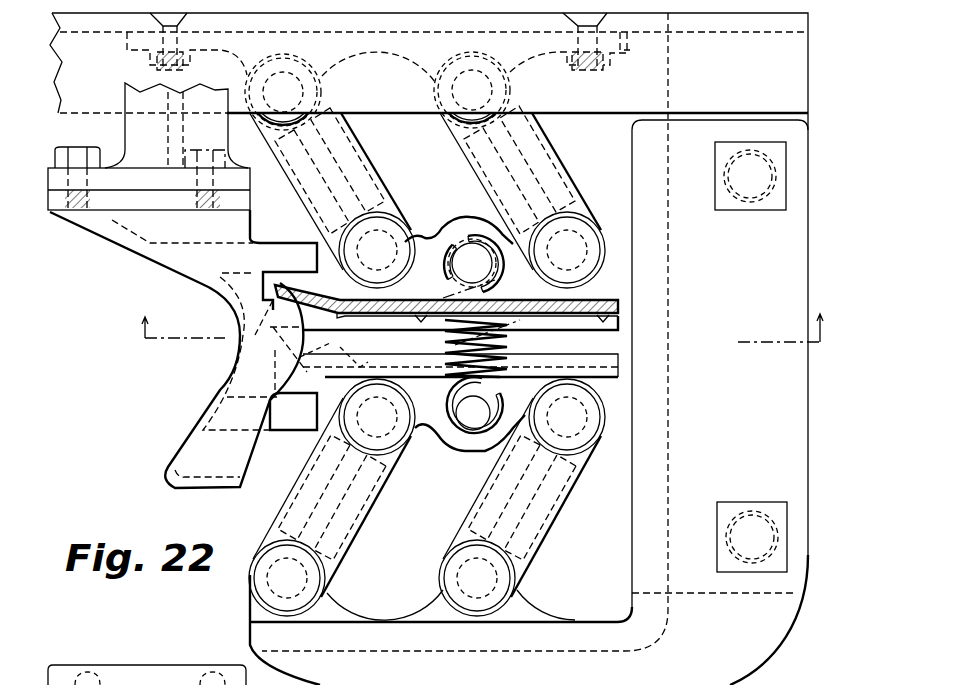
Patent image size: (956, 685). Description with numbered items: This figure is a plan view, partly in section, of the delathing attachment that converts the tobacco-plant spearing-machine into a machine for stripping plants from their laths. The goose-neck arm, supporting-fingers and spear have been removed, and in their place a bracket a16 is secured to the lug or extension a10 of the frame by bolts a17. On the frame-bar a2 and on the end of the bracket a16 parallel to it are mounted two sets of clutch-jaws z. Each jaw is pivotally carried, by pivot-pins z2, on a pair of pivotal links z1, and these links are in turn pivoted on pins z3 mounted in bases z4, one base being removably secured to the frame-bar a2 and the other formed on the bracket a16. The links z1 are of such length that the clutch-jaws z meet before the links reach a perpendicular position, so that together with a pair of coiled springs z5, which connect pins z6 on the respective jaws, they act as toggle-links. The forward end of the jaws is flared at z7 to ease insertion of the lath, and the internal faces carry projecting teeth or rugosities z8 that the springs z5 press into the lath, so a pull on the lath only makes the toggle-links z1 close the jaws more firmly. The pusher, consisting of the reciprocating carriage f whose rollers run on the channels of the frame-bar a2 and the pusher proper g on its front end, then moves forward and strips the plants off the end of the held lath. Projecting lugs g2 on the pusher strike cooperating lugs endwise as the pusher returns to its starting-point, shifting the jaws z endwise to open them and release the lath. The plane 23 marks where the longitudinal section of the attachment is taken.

The frame-bar a2 is at (802, 88).
The lug or extension a10 is at (803, 118).
The bolts a17 is at (732, 205).
The bracket a16 is at (748, 672).
The reciprocating carriage f is at (135, 130).
The pusher proper g is at (197, 282).
The projecting lugs g2 is at (287, 243).
The clutch-jaws z is at (620, 307).
The pivotal links z1 is at (377, 185).
The pivot-pins z2 is at (400, 238).
The pins z3 is at (277, 123).
The bases z4 is at (420, 63).
The coiled springs z5 is at (490, 290).
The pins z6 is at (472, 416).
The flared forward end z7 is at (297, 300).
The projecting teeth or rugosities z8 is at (340, 318).
The plane 23 is at (482, 334).